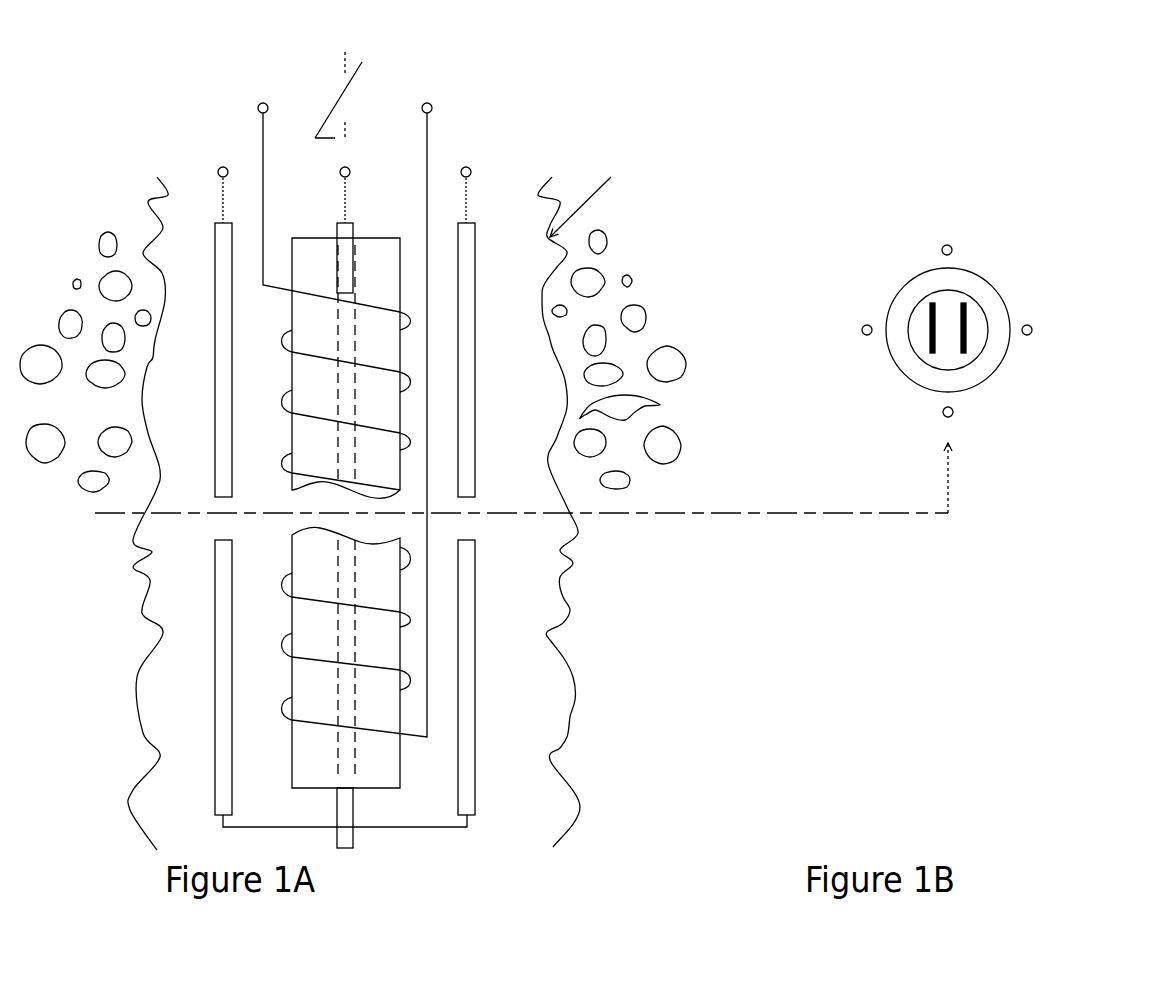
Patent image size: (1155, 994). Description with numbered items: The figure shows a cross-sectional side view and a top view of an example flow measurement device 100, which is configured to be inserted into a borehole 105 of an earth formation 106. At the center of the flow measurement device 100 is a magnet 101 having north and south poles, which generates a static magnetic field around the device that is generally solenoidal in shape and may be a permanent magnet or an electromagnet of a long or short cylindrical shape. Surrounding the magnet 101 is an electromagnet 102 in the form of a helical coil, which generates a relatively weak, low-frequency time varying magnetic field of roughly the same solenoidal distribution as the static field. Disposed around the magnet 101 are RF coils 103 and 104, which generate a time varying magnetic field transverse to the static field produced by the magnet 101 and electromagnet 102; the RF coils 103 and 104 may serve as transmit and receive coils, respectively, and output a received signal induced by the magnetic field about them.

In FIG. 1B, the flow measurement device 100 is at (960, 110).
In FIG. 1A, the magnet 101 is at (402, 652).
In FIG. 1B, the magnet 101 is at (983, 307).
In FIG. 1A, the electromagnet 102 is at (235, 125).
In FIG. 1B, the electromagnet 102 is at (898, 277).
In FIG. 1A, the RF coil 103 is at (207, 170).
In FIG. 1B, the RF coil 103 is at (855, 315).
In FIG. 1A, the RF coil 104 is at (365, 162).
In FIG. 1B, the RF coil 104 is at (960, 230).
In FIG. 1A, the borehole 105 is at (692, 160).
In FIG. 1A, the earth formation 106 is at (88, 423).